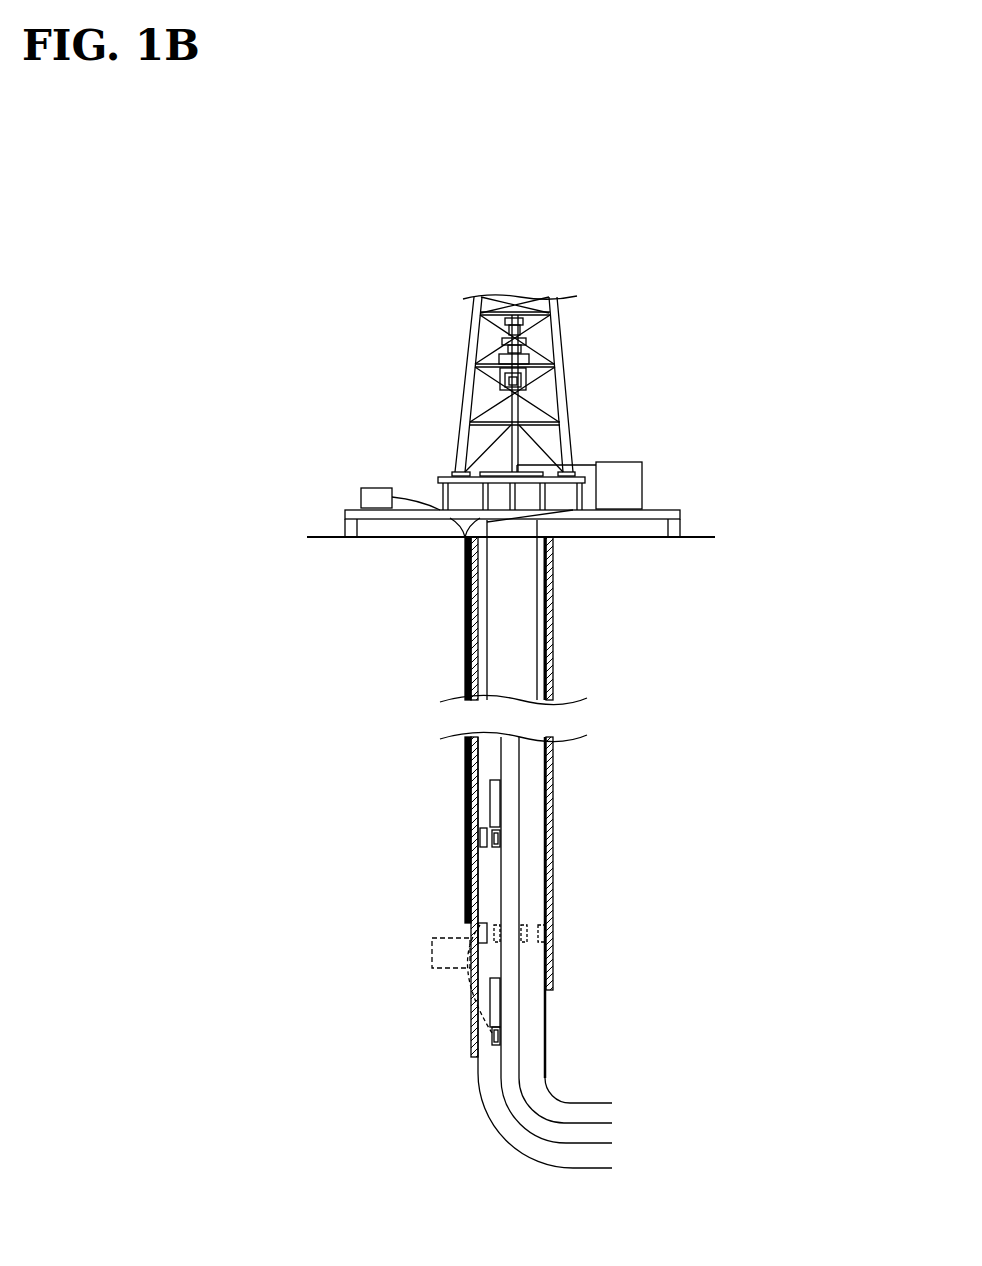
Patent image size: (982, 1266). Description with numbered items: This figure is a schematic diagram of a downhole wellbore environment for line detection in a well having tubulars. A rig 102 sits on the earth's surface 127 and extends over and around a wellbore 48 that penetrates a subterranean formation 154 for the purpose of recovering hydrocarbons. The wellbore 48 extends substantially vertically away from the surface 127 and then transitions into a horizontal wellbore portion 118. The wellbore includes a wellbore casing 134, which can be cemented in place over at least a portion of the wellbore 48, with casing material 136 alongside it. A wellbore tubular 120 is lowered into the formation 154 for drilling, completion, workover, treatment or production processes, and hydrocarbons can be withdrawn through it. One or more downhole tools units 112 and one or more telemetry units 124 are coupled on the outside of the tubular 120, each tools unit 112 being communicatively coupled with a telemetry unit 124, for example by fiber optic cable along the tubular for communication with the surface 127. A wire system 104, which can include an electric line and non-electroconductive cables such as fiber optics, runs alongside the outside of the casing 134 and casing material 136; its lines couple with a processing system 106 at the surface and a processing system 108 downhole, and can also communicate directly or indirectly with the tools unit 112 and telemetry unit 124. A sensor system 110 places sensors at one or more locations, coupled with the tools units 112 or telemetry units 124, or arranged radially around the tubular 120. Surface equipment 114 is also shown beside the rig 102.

The rig 102 is at (562, 360).
The wire system 104 is at (465, 660).
The processing system 106 is at (375, 488).
The processing system 108 is at (432, 968).
The sensor system 110 is at (480, 838).
The downhole tools unit 112 is at (490, 805).
The surface equipment 114 is at (642, 476).
The horizontal wellbore portion 118 is at (605, 1168).
The wellbore tubular 120 is at (522, 837).
The telemetry unit 124 is at (500, 847).
The earth's surface 127 is at (700, 537).
The wellbore casing 134 is at (541, 617).
The casing material 136 is at (555, 675).
The subterranean formation 154 is at (312, 631).
The wellbore 48 is at (538, 780).